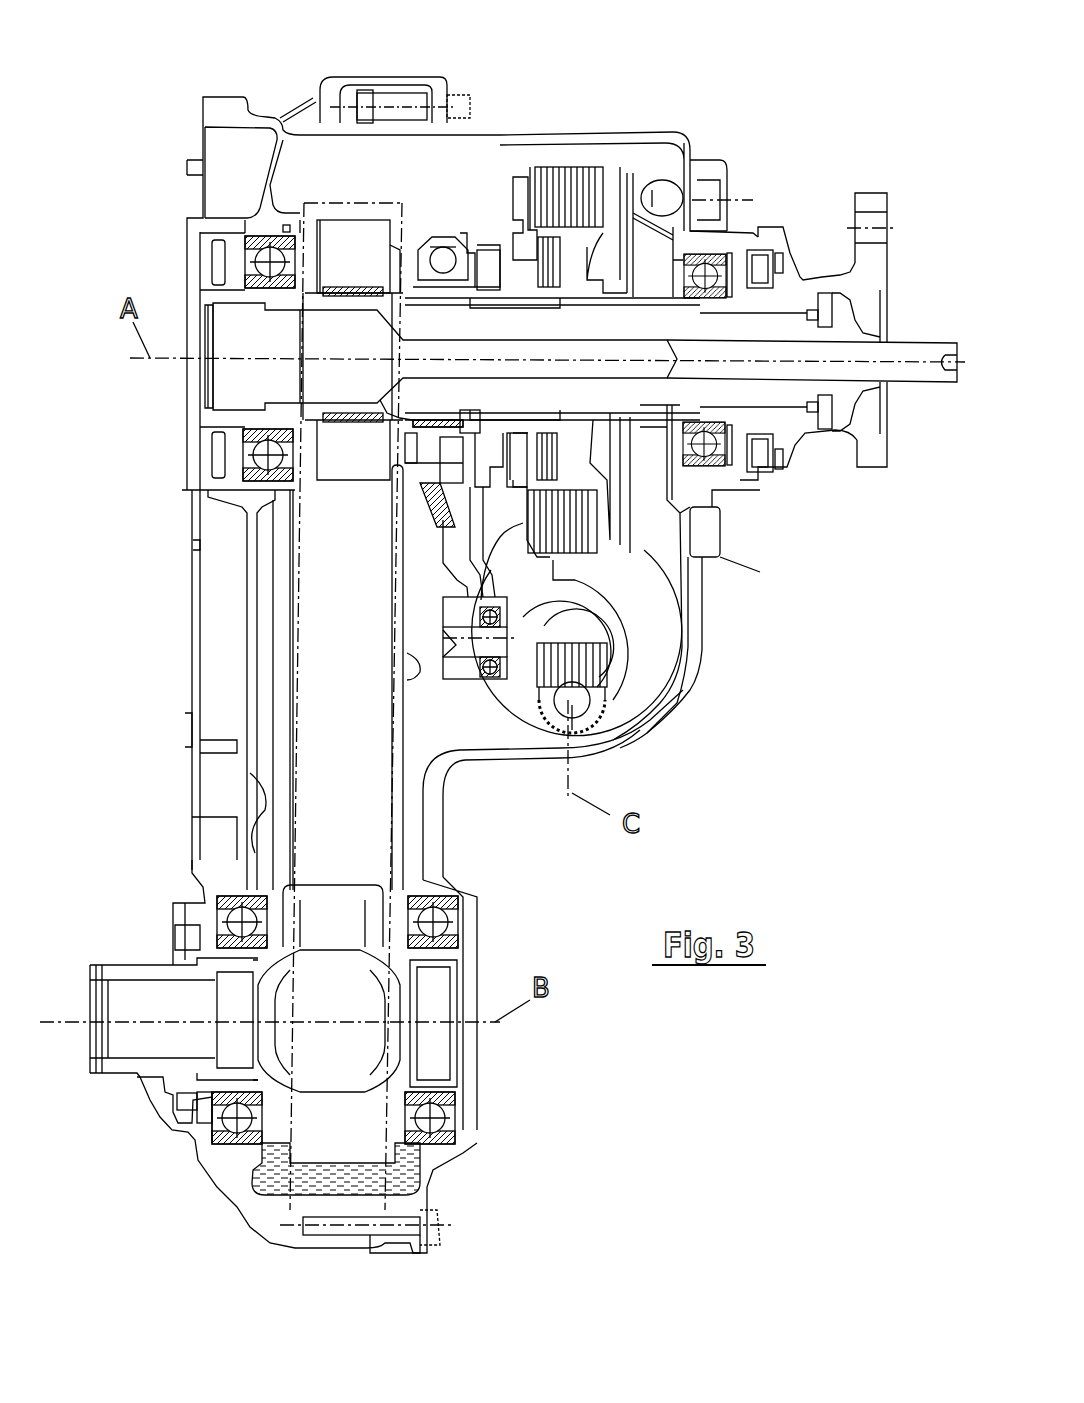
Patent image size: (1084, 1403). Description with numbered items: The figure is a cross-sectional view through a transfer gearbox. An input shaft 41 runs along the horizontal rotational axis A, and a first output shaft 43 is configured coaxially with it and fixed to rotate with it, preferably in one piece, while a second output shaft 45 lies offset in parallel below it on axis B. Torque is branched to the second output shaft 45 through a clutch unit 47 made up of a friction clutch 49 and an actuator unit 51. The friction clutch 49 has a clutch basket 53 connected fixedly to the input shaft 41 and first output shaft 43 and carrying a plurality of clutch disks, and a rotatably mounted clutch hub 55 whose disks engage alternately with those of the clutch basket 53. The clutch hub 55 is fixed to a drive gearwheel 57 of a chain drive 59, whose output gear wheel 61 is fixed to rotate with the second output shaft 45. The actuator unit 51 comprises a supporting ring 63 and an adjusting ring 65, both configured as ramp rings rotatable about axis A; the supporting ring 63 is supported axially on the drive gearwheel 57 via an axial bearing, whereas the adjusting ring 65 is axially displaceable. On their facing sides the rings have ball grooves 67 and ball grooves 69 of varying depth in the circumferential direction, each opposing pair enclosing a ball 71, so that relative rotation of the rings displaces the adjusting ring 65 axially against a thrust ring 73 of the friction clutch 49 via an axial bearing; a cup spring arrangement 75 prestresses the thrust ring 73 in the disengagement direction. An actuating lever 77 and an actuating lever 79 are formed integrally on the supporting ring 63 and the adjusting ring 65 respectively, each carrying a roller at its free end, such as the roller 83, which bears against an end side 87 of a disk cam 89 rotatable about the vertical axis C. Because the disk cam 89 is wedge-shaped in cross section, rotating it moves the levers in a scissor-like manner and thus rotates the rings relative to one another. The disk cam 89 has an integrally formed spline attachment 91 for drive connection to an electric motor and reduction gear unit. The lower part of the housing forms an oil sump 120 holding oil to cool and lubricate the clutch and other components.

The input shaft 41 is at (200, 420).
The first output shaft 43 is at (913, 352).
The second output shaft 45 is at (118, 1068).
The clutch unit 47 is at (511, 172).
The friction clutch 49 is at (568, 133).
The actuator unit 51 is at (540, 777).
The clutch basket 53 is at (608, 167).
The clutch hub 55 is at (603, 237).
The drive gearwheel 57 is at (345, 242).
The chain drive 59 is at (300, 631).
The output gear wheel 61 is at (320, 1133).
The supporting ring 63 is at (427, 243).
The adjusting ring 65 is at (488, 245).
The ball grooves 67 is at (437, 237).
The ball grooves 69 is at (457, 235).
The ball 71 is at (443, 253).
The thrust ring 73 is at (523, 183).
The cup spring arrangement 75 is at (543, 298).
The actuating lever 77 is at (440, 503).
The actuating lever 79 is at (443, 563).
The roller 83 is at (495, 672).
The end side 87 is at (642, 663).
The disk cam 89 is at (653, 567).
The spline attachment 91 is at (603, 707).
The oil sump 120 is at (412, 1187).